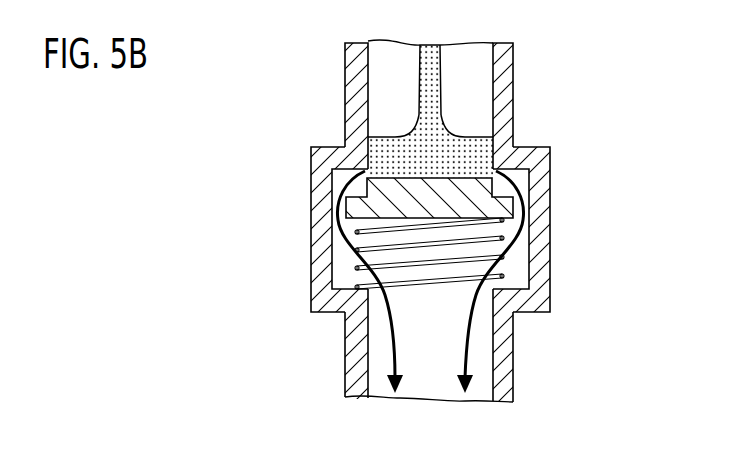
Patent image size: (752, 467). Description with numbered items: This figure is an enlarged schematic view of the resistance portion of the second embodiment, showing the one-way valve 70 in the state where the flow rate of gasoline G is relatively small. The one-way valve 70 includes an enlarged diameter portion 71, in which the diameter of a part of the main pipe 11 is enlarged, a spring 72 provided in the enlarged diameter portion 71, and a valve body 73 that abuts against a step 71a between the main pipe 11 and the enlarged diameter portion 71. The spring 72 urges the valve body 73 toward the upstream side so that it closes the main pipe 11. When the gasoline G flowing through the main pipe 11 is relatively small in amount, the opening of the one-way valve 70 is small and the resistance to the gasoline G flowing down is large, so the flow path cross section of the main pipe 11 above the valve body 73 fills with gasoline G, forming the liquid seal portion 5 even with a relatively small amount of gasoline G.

The main pipe 11 is at (515, 68).
The one-way valve 70 is at (554, 128).
The enlarged diameter portion 71 is at (543, 275).
The step 71a is at (520, 173).
The valve body 73 is at (498, 207).
The spring 72 is at (428, 283).
The liquid seal portion 5 is at (397, 157).
The gasoline G is at (430, 53).